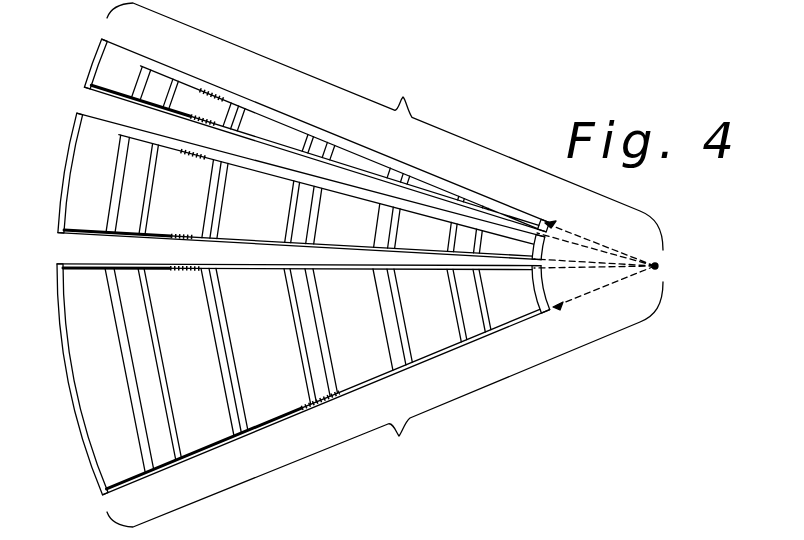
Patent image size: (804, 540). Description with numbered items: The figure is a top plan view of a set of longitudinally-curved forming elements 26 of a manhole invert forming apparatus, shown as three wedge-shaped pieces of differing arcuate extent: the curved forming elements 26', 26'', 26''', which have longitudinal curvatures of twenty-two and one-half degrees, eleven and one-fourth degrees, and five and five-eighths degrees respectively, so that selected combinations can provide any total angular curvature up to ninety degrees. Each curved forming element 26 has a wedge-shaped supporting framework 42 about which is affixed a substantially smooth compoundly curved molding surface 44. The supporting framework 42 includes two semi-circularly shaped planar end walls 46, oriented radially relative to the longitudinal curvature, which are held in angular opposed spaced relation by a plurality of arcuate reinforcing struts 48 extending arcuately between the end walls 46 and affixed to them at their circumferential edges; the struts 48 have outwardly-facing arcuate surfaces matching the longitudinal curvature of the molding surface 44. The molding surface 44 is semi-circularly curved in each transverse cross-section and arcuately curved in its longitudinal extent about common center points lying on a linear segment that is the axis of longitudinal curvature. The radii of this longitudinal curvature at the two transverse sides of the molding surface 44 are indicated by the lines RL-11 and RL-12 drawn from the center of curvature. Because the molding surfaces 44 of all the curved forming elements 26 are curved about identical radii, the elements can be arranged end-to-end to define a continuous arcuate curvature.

The curved forming element 26 is at (300, 283).
The curved forming element 26' is at (303, 396).
The curved forming element 26'' is at (297, 186).
The curved forming element 26''' is at (316, 135).
The supporting framework 42 is at (391, 156).
The molding surface 44 is at (97, 60).
The end wall 46 is at (313, 124).
The arcuate reinforcing strut 48 is at (308, 146).
The radius of longitudinal curvature RL-11 is at (566, 223).
The radius of longitudinal curvature RL-12 is at (385, 265).